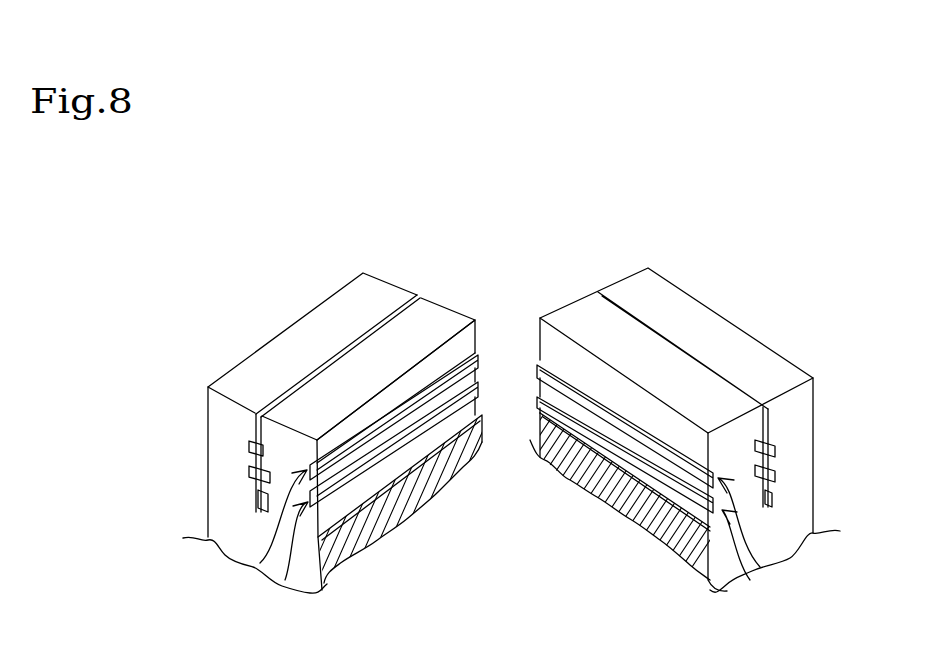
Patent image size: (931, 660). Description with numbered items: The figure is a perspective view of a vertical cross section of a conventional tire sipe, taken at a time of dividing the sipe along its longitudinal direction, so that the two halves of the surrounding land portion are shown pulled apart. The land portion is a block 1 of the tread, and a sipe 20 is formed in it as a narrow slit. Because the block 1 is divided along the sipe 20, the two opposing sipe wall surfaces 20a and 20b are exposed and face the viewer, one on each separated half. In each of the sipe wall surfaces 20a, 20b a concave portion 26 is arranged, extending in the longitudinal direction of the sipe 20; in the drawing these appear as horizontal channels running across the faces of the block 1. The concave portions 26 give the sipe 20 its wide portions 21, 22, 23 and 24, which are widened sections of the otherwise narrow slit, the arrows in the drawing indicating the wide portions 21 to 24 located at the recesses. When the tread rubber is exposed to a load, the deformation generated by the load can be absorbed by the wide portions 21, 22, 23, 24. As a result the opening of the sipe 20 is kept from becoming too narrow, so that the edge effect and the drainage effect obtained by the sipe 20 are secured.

The block 1 is at (243, 359).
The sipe 20 is at (330, 358).
The sipe wall surface 20a is at (448, 348).
The sipe wall surface 20b is at (570, 347).
The wide portion 21 is at (260, 563).
The wide portion 22 is at (760, 567).
The wide portion 23 is at (285, 580).
The wide portion 24 is at (750, 580).
The concave portion 26 is at (378, 462).